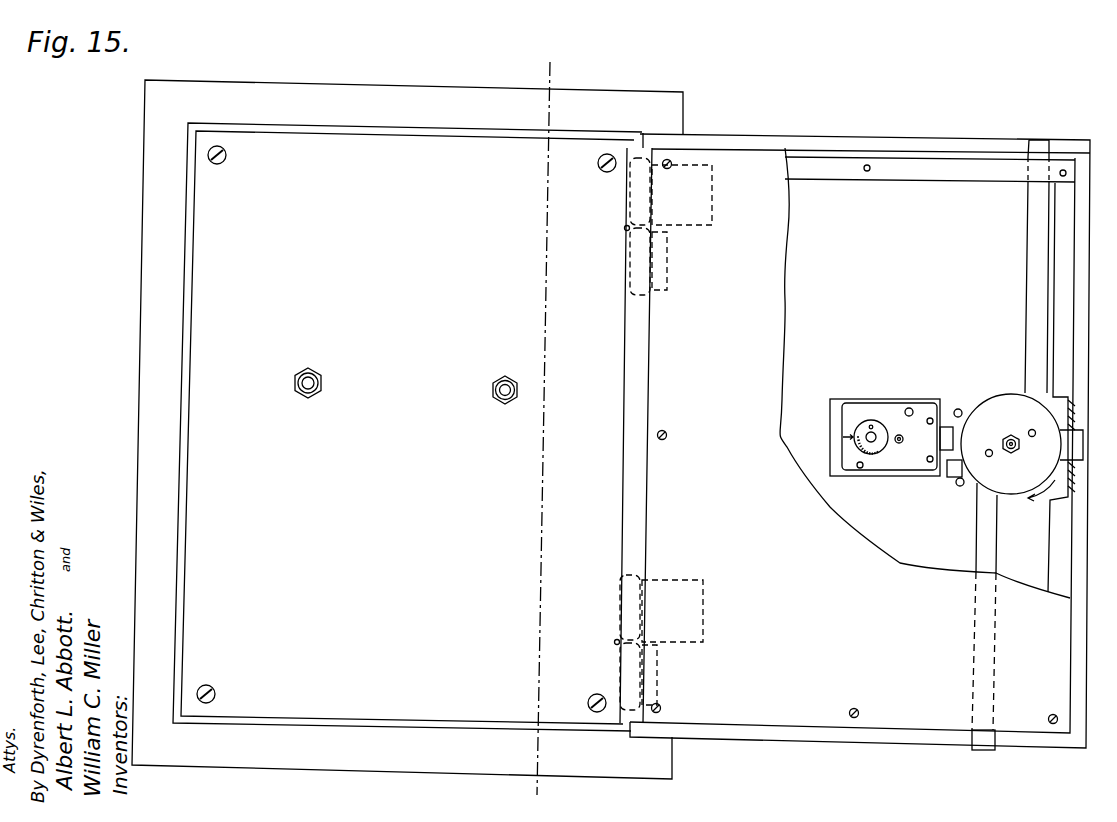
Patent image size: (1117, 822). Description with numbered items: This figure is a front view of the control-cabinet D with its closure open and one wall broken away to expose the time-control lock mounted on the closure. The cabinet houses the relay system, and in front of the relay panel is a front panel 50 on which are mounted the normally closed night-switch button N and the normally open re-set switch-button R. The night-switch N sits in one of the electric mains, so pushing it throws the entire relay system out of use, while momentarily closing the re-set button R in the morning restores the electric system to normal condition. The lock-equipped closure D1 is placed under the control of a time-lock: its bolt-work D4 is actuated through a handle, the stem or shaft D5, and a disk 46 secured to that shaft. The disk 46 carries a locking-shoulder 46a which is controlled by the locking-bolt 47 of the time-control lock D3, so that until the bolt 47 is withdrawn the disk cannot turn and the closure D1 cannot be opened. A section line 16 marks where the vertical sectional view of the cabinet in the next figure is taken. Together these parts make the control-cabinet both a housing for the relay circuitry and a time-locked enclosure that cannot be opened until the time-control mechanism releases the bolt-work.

The control-cabinet D is at (152, 178).
The section line of Fig. 16 is at (512, 70).
The front panel 50 is at (322, 152).
The night-switch button N is at (300, 372).
The re-set switch-button R is at (494, 378).
The closure D1 is at (918, 150).
The bolt-work D4 is at (1033, 262).
The time-control lock D3 is at (897, 463).
The locking-bolt 47 is at (947, 428).
The locking-shoulder 46a is at (958, 472).
The disk 46 is at (993, 408).
The shaft D5 is at (1011, 449).